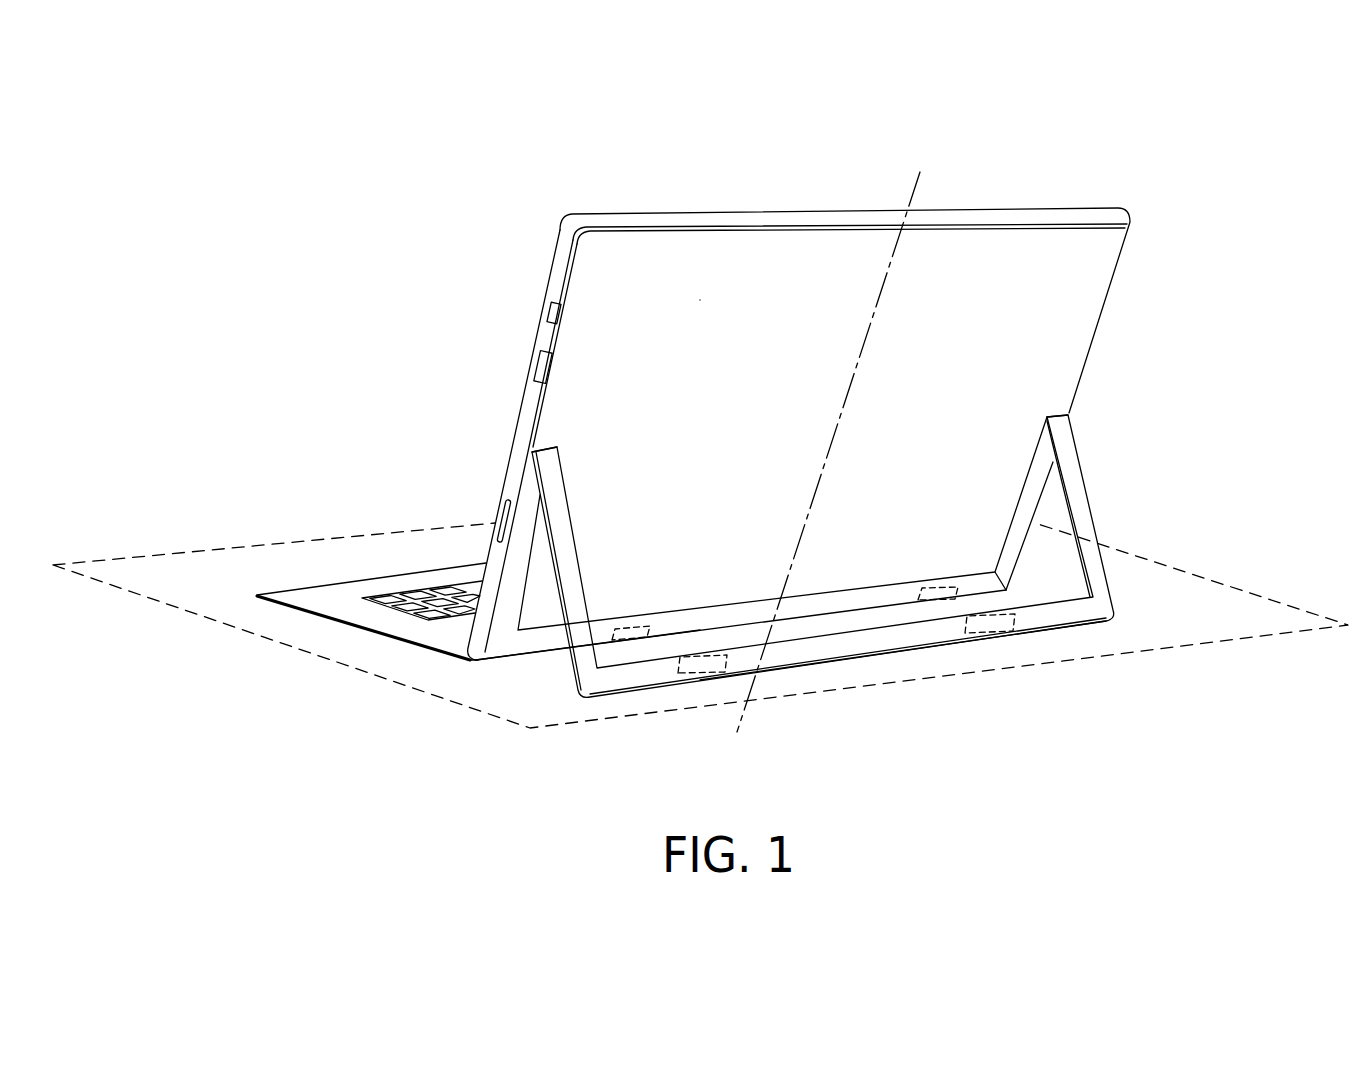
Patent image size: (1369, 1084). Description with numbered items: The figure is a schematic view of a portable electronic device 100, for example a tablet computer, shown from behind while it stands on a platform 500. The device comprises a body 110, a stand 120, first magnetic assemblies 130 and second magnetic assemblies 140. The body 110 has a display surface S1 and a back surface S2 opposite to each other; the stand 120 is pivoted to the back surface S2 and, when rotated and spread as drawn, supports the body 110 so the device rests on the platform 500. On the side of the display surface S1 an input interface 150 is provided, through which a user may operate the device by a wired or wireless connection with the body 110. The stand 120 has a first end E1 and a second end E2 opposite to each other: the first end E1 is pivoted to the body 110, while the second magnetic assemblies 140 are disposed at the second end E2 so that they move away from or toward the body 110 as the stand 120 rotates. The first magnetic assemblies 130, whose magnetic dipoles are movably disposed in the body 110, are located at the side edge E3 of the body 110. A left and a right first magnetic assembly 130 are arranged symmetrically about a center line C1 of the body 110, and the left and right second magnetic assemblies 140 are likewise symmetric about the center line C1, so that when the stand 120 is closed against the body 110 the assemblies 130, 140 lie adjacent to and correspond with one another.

The portable electronic device 100 is at (1306, 747).
The body 110 is at (798, 442).
The stand 120 is at (796, 537).
The first magnetic assembly 130 is at (638, 618).
The second magnetic assembly 140 is at (676, 672).
The input interface 150 is at (345, 612).
The platform 500 is at (348, 530).
The display surface S1 is at (538, 327).
The back surface S2 is at (1077, 333).
The center line C1 is at (834, 426).
The first end E1 is at (530, 460).
The second end E2 is at (1057, 633).
The side edge E3 is at (513, 655).